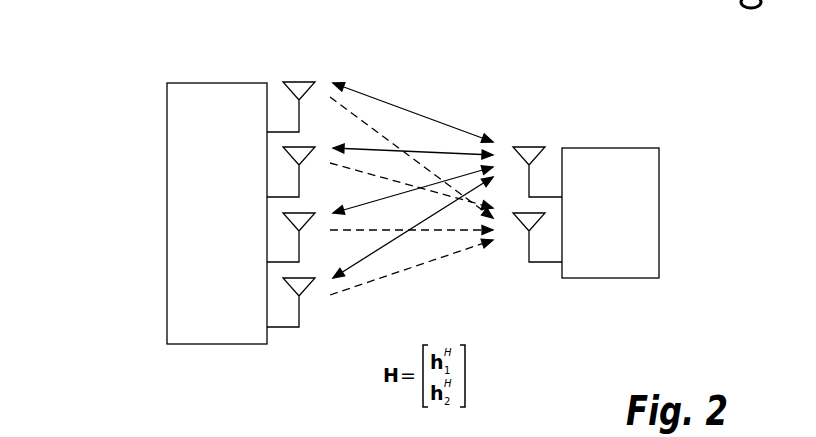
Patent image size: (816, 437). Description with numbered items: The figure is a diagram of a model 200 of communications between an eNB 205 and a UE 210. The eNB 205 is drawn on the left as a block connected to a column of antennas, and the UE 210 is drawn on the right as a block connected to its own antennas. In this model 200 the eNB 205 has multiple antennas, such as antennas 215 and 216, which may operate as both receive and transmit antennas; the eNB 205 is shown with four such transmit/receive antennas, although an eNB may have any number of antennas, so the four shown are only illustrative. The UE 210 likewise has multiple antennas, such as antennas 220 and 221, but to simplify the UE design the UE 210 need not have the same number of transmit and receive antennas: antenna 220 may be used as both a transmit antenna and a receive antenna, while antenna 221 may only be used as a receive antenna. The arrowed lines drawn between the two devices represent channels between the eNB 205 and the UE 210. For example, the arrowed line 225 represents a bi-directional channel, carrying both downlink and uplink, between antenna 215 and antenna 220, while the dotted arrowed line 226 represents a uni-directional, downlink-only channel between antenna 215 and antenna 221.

The model 200 is at (112, 49).
The eNB 205 is at (199, 82).
The UE 210 is at (627, 148).
The antenna 215 is at (297, 81).
The antenna 216 is at (311, 148).
The antenna 220 is at (528, 147).
The antenna 221 is at (520, 208).
The arrowed line 225 is at (400, 109).
The dotted arrowed line 226 is at (358, 117).